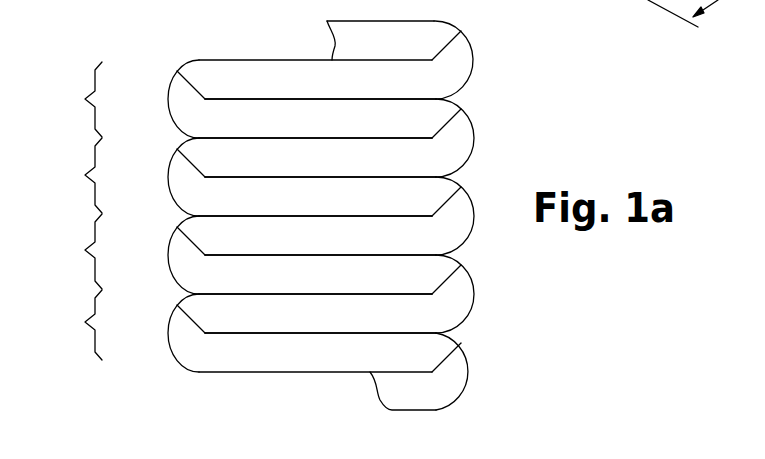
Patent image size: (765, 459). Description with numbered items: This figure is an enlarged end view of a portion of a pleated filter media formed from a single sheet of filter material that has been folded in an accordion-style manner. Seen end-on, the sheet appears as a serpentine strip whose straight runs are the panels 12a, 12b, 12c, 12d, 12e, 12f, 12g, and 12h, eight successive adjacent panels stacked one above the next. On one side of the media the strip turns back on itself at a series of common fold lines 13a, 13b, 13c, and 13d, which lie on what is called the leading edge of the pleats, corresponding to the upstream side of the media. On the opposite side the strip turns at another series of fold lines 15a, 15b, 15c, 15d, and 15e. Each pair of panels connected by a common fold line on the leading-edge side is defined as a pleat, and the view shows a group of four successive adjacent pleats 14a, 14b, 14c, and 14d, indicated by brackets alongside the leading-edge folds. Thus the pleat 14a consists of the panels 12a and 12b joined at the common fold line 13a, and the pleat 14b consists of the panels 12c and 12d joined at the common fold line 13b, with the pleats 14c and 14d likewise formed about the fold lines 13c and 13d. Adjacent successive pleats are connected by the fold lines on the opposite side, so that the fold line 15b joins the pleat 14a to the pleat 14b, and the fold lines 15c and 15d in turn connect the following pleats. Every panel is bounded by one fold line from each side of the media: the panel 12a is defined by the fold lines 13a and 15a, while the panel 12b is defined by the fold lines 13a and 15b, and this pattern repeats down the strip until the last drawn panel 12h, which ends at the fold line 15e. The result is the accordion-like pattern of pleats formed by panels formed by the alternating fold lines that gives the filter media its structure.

The panel 12a is at (277, 95).
The panel 12b is at (344, 134).
The panel 12c is at (277, 173).
The panel 12d is at (344, 212).
The panel 12e is at (277, 251).
The panel 12f is at (344, 290).
The panel 12g is at (277, 330).
The panel 12h is at (344, 368).
The fold line 13a is at (177, 71).
The fold line 13b is at (177, 149).
The fold line 13c is at (177, 227).
The fold line 13d is at (177, 305).
The pleat 14a is at (70, 99).
The pleat 14b is at (70, 175).
The pleat 14c is at (70, 251).
The pleat 14d is at (70, 325).
The fold line 15a is at (461, 31).
The fold line 15b is at (461, 109).
The fold line 15c is at (461, 187).
The fold line 15d is at (461, 265).
The fold line 15e is at (461, 343).